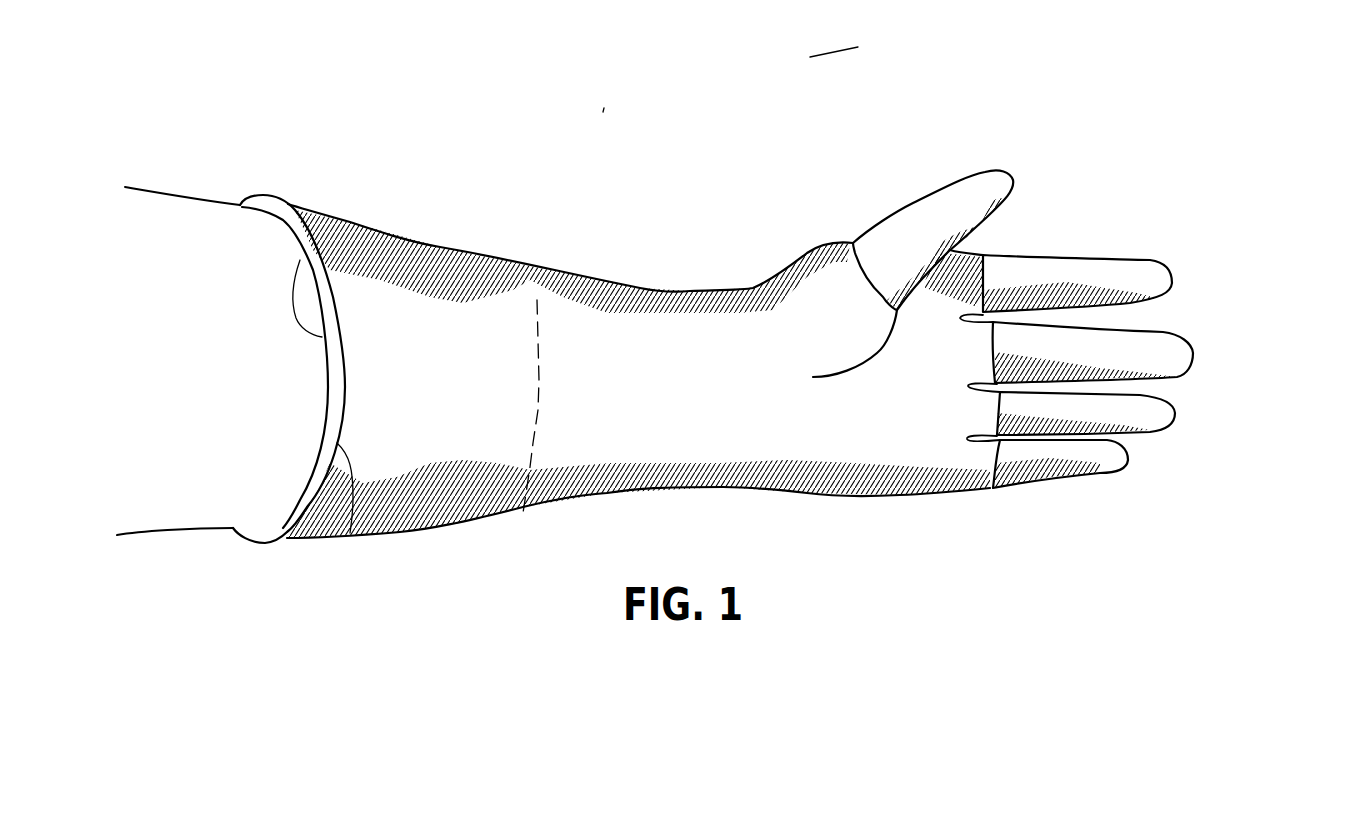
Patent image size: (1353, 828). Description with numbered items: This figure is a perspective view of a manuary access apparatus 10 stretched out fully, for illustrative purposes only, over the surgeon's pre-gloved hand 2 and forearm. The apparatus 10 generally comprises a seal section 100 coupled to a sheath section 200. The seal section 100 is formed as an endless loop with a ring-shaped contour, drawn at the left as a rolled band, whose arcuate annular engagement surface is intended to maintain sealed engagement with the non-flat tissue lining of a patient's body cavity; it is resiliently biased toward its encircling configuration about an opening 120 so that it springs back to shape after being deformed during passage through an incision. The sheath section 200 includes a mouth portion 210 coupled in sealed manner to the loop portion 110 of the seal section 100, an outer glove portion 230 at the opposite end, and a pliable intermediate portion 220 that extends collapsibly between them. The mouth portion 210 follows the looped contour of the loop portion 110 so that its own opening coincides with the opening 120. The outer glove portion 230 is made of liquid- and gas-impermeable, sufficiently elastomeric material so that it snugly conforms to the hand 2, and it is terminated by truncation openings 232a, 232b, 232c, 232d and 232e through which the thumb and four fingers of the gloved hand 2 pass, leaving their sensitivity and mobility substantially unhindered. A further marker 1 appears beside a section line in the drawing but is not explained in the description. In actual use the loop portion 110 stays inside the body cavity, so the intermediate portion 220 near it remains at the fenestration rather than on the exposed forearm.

The manuary access apparatus 10 is at (834, 39).
The seal section 100 is at (285, 180).
The loop portion 110 is at (287, 527).
The opening 120 is at (300, 260).
The section indicator 1 is at (605, 99).
The surgeon's pre-gloved hand 2 is at (537, 300).
The sheath section 200 is at (653, 300).
The mouth portion 210 is at (350, 533).
The pliable intermediate portion 220 is at (723, 457).
The outer glove portion 230 is at (902, 438).
The truncation opening 232a is at (860, 240).
The truncation opening 232b is at (983, 273).
The truncation opening 232c is at (997, 348).
The truncation opening 232d is at (997, 410).
The truncation opening 232e is at (993, 488).